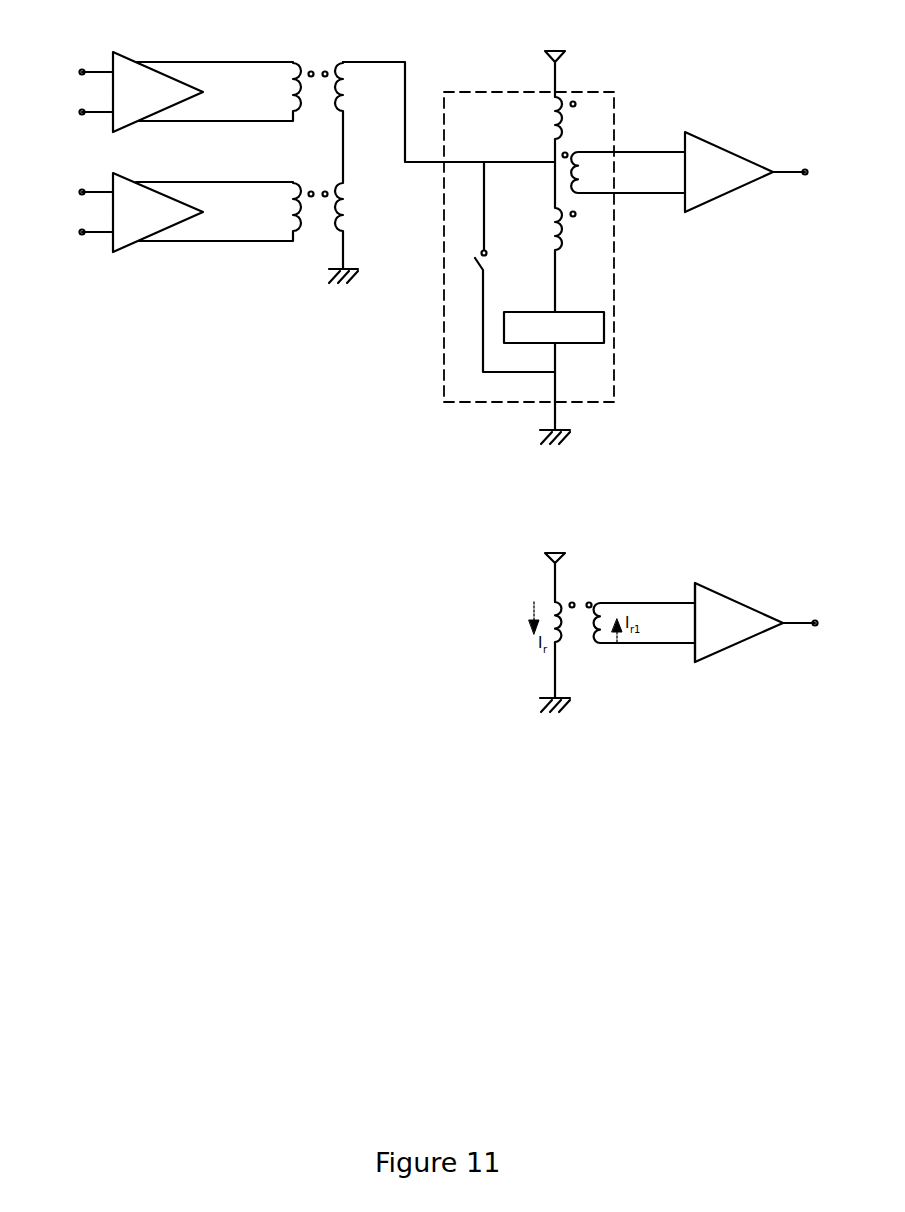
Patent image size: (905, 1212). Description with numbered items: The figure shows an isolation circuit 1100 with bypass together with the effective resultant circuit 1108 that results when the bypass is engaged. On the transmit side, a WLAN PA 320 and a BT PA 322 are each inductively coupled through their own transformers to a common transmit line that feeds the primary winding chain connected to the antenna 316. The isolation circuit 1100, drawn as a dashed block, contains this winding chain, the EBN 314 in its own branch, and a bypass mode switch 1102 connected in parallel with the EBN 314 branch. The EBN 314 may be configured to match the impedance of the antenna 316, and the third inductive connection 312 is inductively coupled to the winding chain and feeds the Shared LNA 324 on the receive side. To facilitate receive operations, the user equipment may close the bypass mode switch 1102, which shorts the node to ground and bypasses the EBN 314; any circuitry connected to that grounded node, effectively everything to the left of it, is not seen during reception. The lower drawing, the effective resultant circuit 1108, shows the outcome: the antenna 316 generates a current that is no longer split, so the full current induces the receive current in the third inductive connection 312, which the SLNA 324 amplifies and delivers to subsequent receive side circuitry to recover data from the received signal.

The third inductive connection 312 is at (578, 194).
The EBN 314 is at (593, 336).
The antenna 316 is at (550, 50).
The WLAN PA 320 is at (113, 133).
The BT PA 322 is at (113, 253).
The Shared LNA (SLNA) 324 is at (687, 213).
The isolation circuit 1100 is at (606, 396).
The bypass mode switch 1102 is at (488, 258).
The effective resultant circuit 1108 is at (638, 738).